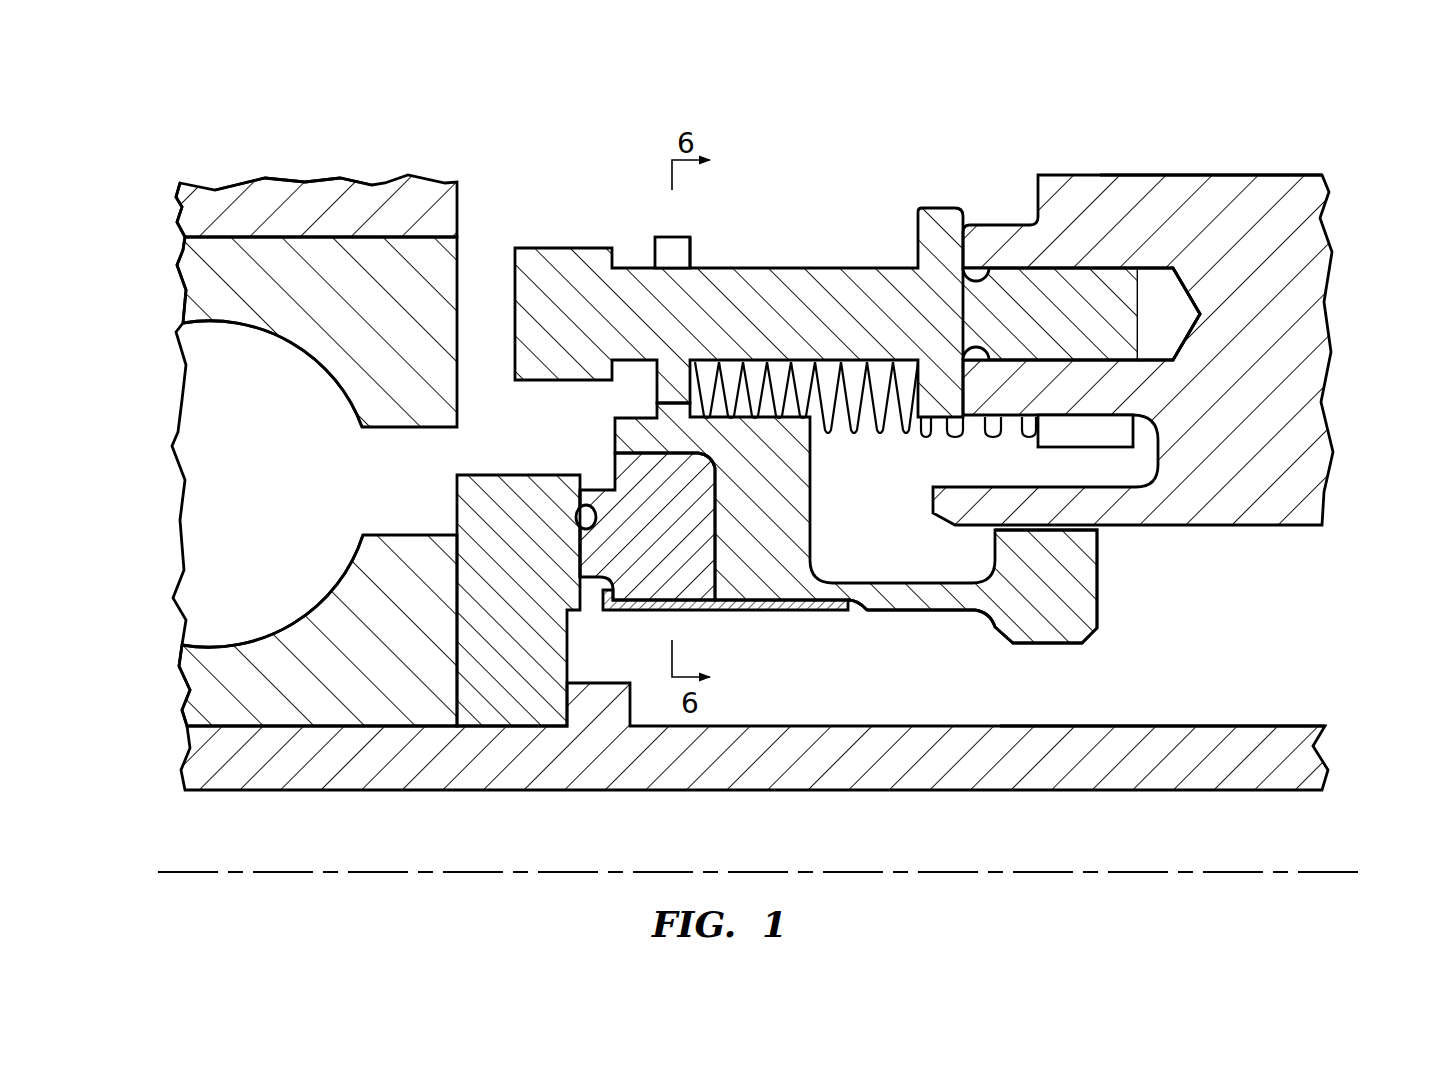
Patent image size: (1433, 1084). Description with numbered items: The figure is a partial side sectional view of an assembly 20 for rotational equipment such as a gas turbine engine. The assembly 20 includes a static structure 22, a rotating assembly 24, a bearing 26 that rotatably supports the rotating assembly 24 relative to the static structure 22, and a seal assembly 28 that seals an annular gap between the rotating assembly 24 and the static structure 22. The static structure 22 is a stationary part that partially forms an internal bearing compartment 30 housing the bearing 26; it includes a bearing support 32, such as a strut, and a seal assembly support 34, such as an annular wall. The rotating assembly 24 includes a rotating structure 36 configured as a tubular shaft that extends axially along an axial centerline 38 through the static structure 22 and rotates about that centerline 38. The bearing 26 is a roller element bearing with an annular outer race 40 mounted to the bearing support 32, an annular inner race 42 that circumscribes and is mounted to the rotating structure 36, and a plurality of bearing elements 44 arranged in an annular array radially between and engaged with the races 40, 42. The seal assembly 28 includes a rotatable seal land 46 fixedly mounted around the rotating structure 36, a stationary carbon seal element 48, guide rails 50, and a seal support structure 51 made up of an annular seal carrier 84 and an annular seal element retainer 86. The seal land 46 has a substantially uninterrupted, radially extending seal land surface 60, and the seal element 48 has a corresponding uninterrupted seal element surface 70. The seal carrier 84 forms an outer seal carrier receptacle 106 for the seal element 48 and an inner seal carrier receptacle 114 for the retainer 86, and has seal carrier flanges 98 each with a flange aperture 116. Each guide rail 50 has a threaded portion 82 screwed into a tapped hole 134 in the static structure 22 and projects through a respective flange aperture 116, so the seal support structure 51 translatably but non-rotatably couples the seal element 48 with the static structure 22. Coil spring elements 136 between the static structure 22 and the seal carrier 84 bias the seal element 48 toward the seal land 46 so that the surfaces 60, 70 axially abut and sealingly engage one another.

The assembly 20 is at (192, 128).
The static structure 22 is at (373, 180).
The rotating assembly 24 is at (1338, 716).
The bearing 26 is at (168, 336).
The seal assembly 28 is at (812, 170).
The internal bearing compartment 30 is at (512, 104).
The bearing support 32 is at (305, 183).
The seal assembly support 34 is at (1284, 176).
The rotating structure 36 is at (1330, 766).
The axial centerline 38 is at (1341, 870).
The outer race 40 is at (183, 262).
The inner race 42 is at (183, 697).
The bearing elements 44 is at (183, 522).
The seal land 46 is at (505, 729).
The seal element 48 is at (723, 515).
The guide rails 50 is at (537, 245).
The seal support structure 51 is at (919, 628).
The seal land surface 60 is at (578, 511).
The seal element surface 70 is at (580, 560).
The threaded portion 82 is at (1068, 264).
The seal carrier 84 is at (1102, 600).
The seal element retainer 86 is at (743, 616).
The seal carrier flanges 98 is at (658, 234).
The outer seal carrier receptacle 106 is at (601, 463).
The inner seal carrier receptacle 114 is at (860, 618).
The flange aperture 116 is at (684, 252).
The tapped hole 134 is at (1157, 292).
The spring elements 136 is at (880, 447).